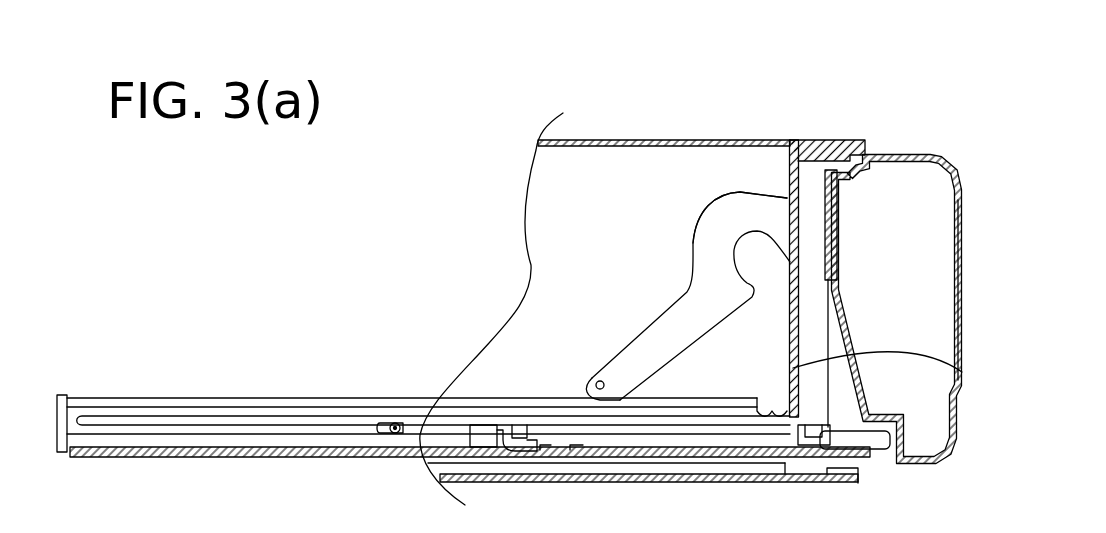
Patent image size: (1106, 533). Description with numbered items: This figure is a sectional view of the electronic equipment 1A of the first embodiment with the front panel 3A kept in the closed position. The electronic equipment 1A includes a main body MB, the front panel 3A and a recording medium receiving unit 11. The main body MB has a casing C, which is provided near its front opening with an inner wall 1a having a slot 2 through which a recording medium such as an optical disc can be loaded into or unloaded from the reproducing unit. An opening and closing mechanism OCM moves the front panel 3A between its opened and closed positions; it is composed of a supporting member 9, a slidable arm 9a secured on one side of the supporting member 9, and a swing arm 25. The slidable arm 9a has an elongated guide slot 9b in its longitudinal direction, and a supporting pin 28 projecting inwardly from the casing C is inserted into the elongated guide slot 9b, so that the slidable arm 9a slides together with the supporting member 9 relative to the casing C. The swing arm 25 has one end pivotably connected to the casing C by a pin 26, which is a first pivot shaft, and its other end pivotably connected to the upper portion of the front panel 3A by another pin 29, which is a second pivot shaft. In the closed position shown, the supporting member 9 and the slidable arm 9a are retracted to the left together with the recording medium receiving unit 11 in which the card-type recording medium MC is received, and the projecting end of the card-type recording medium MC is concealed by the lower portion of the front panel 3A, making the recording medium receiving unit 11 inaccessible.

The main body MB is at (600, 122).
The casing C is at (660, 140).
The swing arm 25 is at (750, 192).
The electronic equipment 1A is at (822, 140).
The pin 29 is at (875, 168).
The slot 2 is at (849, 195).
The opening/closing member OCM is at (630, 312).
The pin 26 is at (594, 376).
The supporting member 9 is at (730, 398).
The front panel 3A is at (962, 308).
The inner wall 1a is at (962, 372).
The slidable arm 9a is at (98, 440).
The elongated guide slot 9b is at (218, 432).
The supporting pin 28 is at (395, 435).
The recording medium receiving unit 11 is at (688, 448).
The card-type recording medium MC is at (865, 450).